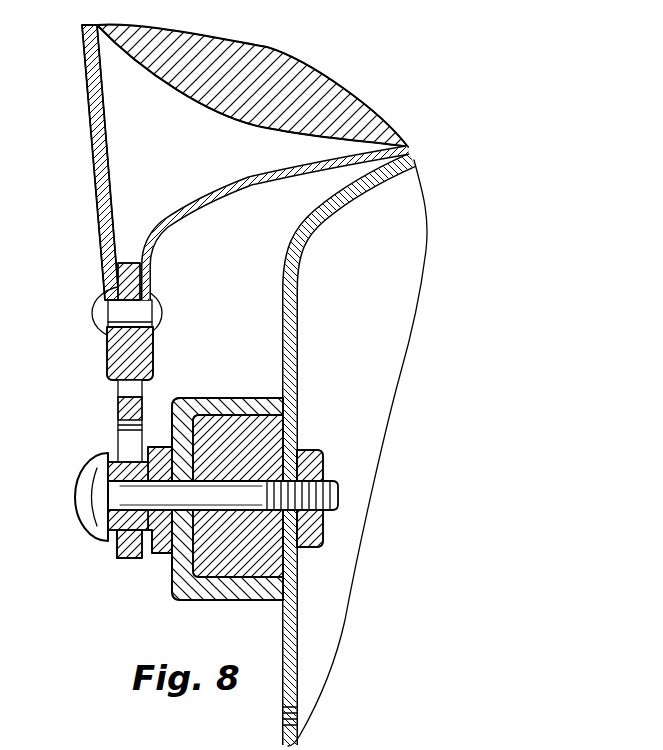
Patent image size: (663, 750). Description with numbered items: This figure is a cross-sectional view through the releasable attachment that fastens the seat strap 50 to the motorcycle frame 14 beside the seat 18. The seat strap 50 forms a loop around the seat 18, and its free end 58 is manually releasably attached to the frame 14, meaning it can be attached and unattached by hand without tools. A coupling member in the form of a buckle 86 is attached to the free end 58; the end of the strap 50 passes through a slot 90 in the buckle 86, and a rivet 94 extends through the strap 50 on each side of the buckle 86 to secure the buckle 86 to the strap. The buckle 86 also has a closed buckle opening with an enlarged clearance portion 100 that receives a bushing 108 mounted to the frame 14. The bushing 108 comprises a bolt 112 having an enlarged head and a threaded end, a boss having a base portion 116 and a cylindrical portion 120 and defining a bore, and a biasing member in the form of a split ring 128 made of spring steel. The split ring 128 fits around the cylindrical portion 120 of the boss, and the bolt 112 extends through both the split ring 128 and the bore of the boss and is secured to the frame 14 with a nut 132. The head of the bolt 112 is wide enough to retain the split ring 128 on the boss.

The frame 14 is at (225, 396).
The seat 18 is at (352, 97).
The seat strap 50 is at (82, 91).
The free end 58 is at (112, 207).
The buckle 86 is at (157, 400).
The slot 90 is at (117, 385).
The rivet 94 is at (153, 308).
The enlarged clearance portion 100 is at (118, 436).
The bushing 108 is at (140, 572).
The bolt 112 is at (238, 487).
The base portion 116 is at (165, 553).
The cylindrical portion 120 is at (96, 522).
The split ring 128 is at (130, 537).
The nut 132 is at (334, 438).